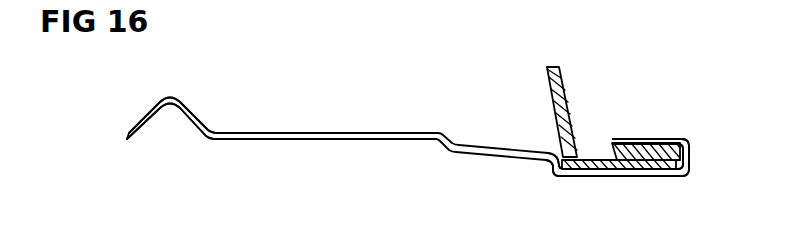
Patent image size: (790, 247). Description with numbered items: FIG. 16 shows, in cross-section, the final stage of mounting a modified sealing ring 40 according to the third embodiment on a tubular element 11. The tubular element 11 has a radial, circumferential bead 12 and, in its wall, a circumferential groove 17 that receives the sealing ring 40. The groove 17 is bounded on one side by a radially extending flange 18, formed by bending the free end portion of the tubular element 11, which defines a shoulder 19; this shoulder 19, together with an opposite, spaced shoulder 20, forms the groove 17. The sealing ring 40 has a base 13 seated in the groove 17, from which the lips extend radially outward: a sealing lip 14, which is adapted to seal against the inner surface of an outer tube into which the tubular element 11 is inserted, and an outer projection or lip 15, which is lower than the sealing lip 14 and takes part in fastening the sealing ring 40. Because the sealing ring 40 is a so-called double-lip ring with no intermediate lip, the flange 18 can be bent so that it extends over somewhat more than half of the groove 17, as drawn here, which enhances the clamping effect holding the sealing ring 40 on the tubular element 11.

The tubular element 11 is at (326, 131).
The radial, circumferential bead 12 is at (144, 123).
The base 13 is at (599, 160).
The sealing lip 14 is at (548, 87).
The outer projection or lip 15 is at (650, 141).
The circumferential groove 17 is at (590, 178).
The radially extending flange 18 is at (628, 142).
The shoulder 19 is at (665, 178).
The opposite, spaced shoulder 20 is at (558, 156).
The sealing ring 40 is at (567, 87).